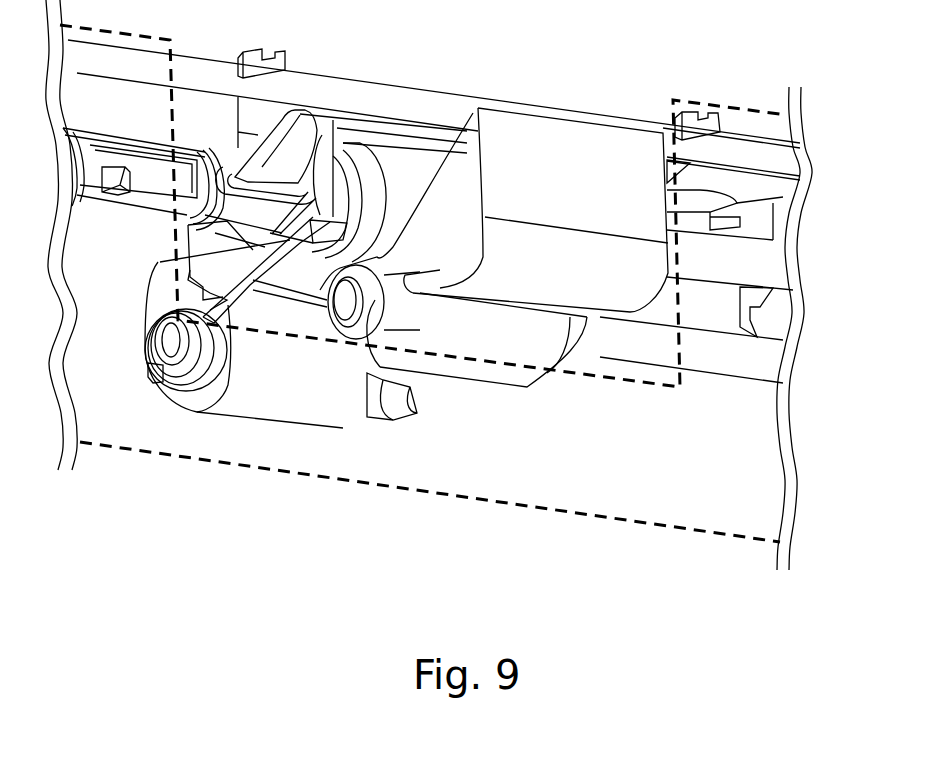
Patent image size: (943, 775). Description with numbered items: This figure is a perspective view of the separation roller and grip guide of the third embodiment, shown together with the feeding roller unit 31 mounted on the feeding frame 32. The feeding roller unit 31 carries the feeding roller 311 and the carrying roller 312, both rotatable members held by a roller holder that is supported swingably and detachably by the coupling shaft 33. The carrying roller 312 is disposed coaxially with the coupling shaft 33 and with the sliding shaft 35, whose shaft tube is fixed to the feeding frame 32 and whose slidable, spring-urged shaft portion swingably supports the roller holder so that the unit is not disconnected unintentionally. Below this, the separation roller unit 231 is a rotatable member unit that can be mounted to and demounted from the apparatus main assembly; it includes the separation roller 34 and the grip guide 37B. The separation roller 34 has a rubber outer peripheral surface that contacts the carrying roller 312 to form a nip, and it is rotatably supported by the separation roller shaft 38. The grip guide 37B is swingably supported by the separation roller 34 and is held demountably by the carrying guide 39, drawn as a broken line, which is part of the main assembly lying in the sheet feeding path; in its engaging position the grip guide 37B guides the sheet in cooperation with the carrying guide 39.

The feeding roller unit 31 is at (370, 110).
The feeding roller 311 is at (232, 405).
The carrying roller 312 is at (403, 167).
The feeding frame 32 is at (457, 110).
The coupling shaft 33 is at (760, 257).
The separation roller 34 is at (497, 373).
The sliding shaft 35 is at (157, 222).
The grip guide 37B is at (588, 185).
The separation roller shaft 38 is at (343, 307).
The carrying guide 39 is at (412, 490).
The separation roller unit 231 is at (567, 410).